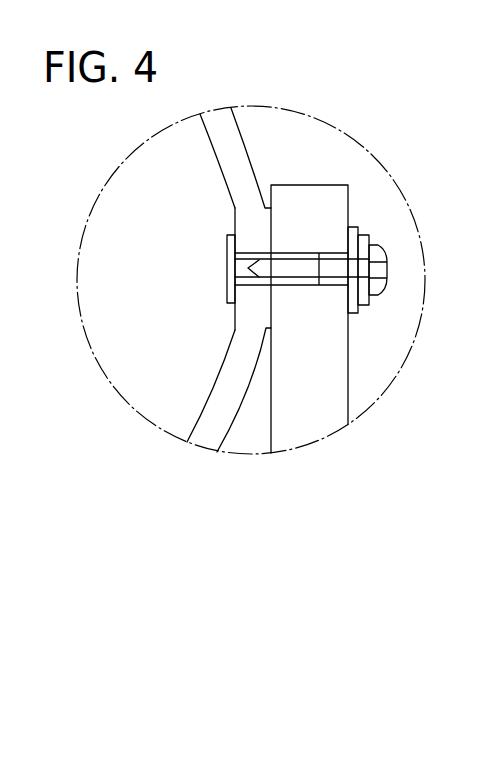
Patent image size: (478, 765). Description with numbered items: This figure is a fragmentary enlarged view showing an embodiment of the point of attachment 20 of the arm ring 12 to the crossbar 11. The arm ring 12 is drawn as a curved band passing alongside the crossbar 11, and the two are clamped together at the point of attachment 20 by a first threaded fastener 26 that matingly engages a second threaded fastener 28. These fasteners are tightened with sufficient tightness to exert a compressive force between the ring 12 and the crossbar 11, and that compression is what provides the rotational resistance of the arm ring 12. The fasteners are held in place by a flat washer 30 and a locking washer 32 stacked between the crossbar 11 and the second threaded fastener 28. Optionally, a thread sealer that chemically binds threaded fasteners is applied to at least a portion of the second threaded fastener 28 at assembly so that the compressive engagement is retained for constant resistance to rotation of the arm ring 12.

The crossbar 11 is at (323, 403).
The arm ring 12 is at (228, 135).
The point of attachment 20 is at (318, 300).
The first threaded fastener 26 is at (227, 246).
The second threaded fastener 28 is at (380, 275).
The flat washer 30 is at (353, 227).
The locking washer 32 is at (363, 235).